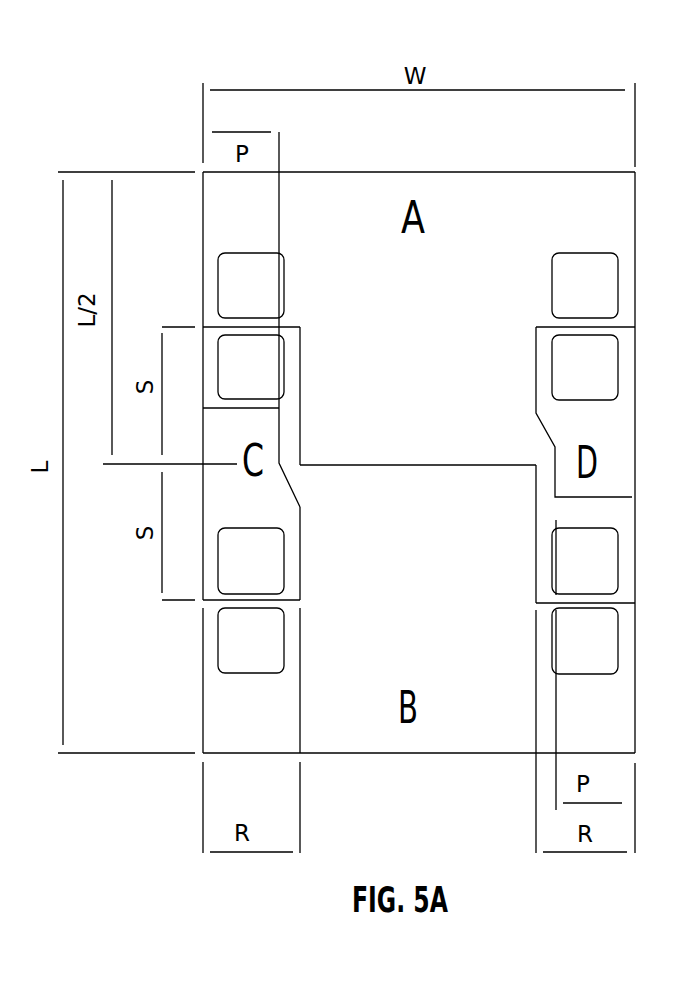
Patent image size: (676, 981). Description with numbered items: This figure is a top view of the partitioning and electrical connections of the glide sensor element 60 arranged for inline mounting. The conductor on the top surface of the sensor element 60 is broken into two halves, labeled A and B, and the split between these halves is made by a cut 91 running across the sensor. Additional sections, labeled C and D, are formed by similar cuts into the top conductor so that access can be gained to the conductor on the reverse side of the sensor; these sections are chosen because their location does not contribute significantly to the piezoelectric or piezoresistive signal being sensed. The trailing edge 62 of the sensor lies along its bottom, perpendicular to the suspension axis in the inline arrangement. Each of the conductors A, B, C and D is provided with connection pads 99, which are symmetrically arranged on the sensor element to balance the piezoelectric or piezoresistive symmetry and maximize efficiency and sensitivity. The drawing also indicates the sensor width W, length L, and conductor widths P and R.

The glide sensor element 60 is at (337, 77).
The cut 91 is at (407, 465).
The trailing edge 62 is at (403, 754).
The connection pads 99 is at (597, 275).